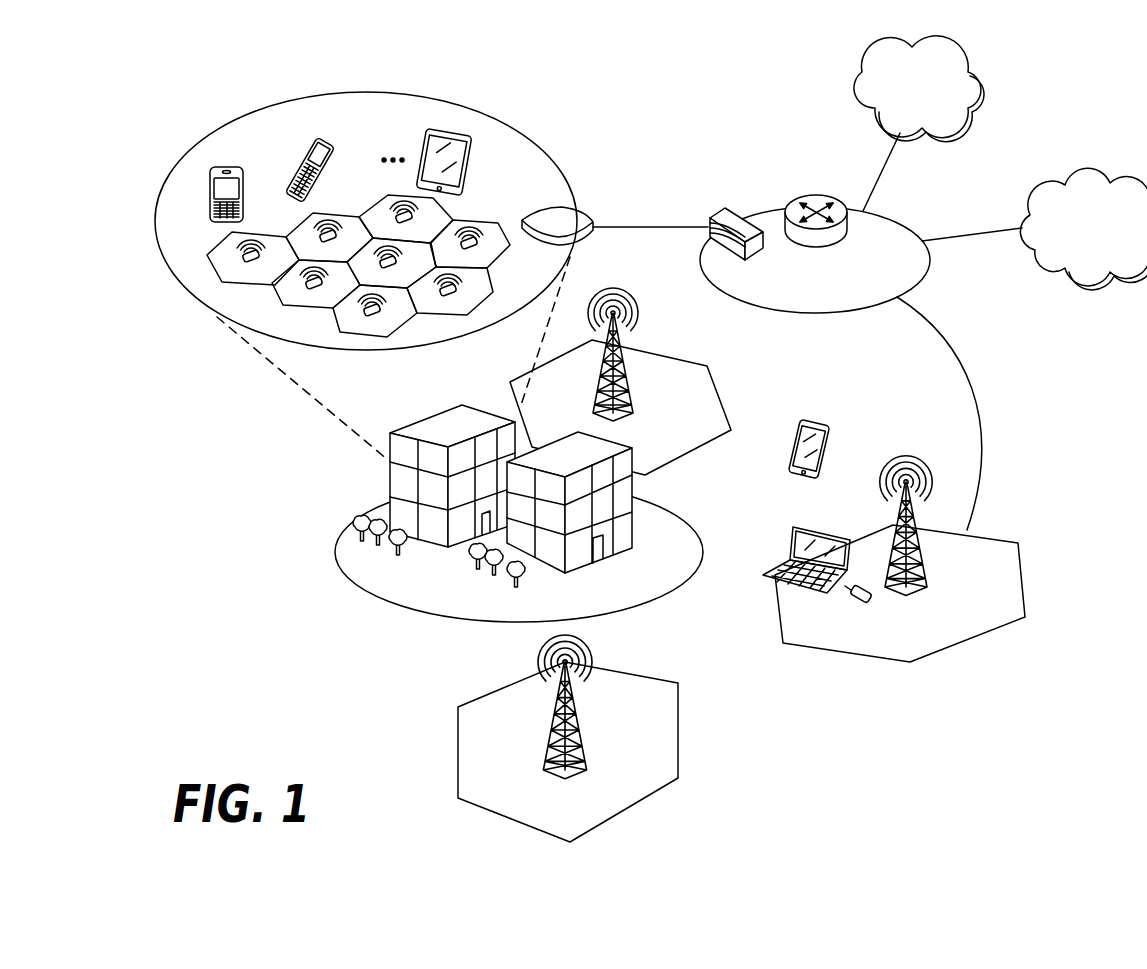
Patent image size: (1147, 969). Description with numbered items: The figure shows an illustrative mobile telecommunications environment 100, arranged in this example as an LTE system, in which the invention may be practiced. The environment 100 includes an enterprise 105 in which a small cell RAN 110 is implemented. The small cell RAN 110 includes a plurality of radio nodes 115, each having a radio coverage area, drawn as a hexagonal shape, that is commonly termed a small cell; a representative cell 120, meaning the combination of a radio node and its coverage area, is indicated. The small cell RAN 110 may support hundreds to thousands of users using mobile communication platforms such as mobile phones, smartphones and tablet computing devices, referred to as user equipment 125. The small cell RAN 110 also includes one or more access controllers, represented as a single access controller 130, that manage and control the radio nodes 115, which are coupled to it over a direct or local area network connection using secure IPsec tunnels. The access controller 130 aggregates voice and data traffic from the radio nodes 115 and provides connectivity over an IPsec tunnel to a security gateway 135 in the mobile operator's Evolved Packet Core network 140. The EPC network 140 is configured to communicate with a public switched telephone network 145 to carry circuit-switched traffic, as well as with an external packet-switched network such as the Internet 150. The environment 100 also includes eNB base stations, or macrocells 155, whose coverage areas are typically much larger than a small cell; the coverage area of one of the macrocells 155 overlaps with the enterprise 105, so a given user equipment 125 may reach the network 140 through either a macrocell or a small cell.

The mobile telecommunications environment 100 is at (687, 131).
The enterprise 105 is at (333, 538).
The small cell RAN 110 is at (512, 127).
The radio node 115 is at (470, 245).
The cell 120 is at (482, 228).
The user equipment 125 is at (245, 175).
The access controller 130 is at (587, 212).
The security gateway 135 is at (733, 210).
The Evolved Packet Core network 140 is at (815, 313).
The public switched telephone network 145 is at (1080, 183).
The Internet 150 is at (987, 62).
The macrocell 155 is at (712, 382).